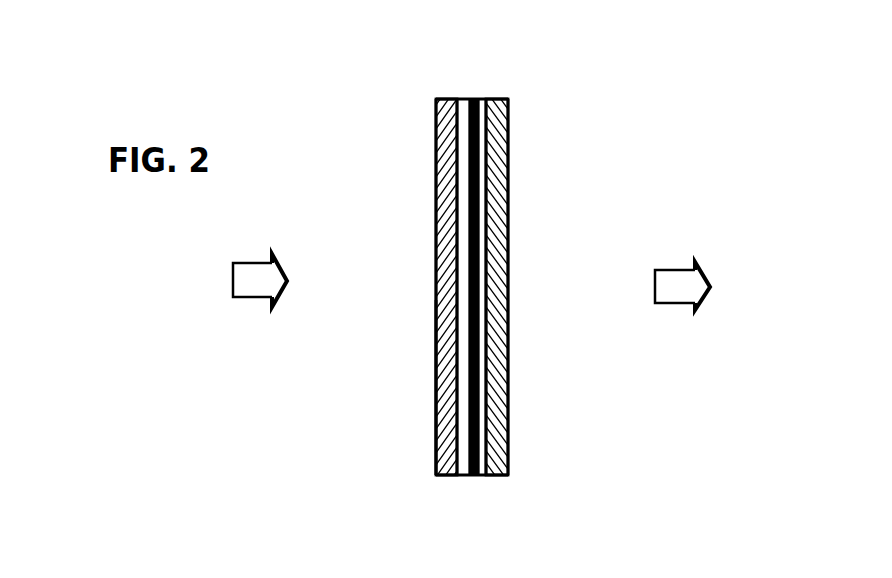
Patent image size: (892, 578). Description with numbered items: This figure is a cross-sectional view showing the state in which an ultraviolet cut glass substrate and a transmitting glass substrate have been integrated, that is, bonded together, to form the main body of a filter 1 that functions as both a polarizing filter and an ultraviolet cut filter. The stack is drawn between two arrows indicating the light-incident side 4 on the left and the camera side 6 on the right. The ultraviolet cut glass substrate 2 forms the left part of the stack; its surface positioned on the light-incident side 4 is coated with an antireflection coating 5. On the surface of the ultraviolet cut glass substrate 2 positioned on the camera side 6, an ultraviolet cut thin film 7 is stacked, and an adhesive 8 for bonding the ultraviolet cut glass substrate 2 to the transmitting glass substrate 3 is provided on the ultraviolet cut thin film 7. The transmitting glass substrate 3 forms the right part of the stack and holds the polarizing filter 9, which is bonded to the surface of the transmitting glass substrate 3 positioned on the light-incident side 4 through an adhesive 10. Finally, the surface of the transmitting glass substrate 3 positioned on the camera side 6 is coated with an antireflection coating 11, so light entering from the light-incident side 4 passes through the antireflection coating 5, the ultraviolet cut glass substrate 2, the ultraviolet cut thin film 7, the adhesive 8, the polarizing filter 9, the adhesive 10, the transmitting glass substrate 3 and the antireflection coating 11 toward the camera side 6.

The main body of a filter 1 is at (478, 288).
The ultraviolet cut glass substrate 2 is at (447, 100).
The transmitting glass substrate 3 is at (497, 100).
The light-incident side 4 is at (254, 300).
The antireflection coating 5 is at (433, 400).
The camera side 6 is at (680, 308).
The ultraviolet cut thin film 7 is at (437, 181).
The adhesive 8 is at (461, 477).
The polarizing filter 9 is at (476, 393).
The adhesive 10 is at (478, 207).
The antireflection coating 11 is at (505, 446).